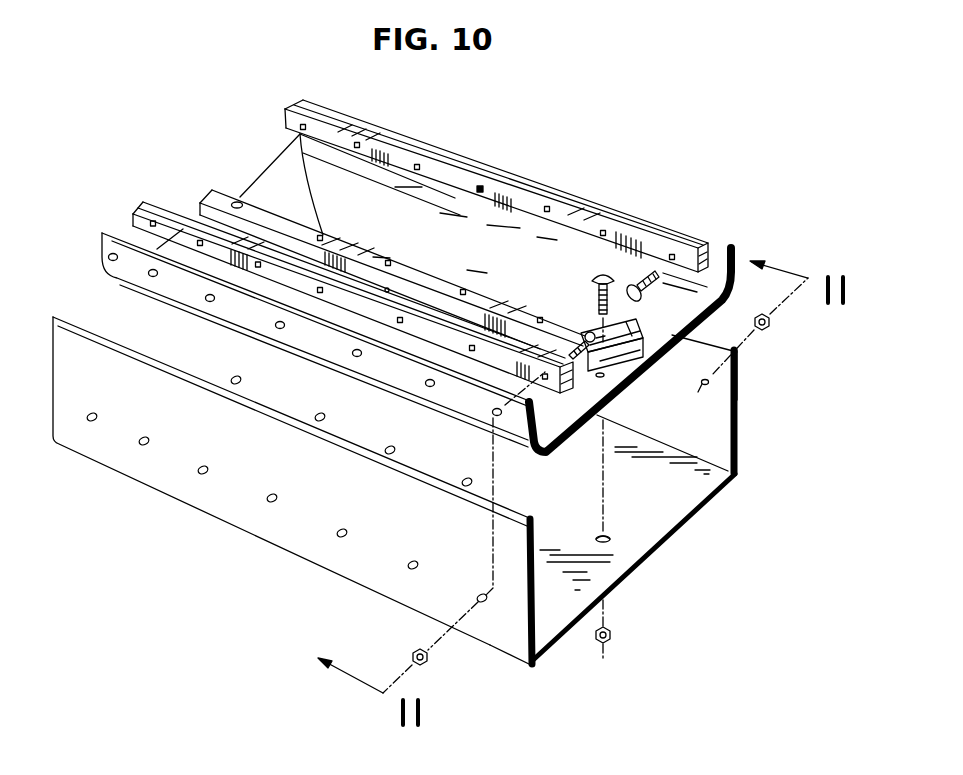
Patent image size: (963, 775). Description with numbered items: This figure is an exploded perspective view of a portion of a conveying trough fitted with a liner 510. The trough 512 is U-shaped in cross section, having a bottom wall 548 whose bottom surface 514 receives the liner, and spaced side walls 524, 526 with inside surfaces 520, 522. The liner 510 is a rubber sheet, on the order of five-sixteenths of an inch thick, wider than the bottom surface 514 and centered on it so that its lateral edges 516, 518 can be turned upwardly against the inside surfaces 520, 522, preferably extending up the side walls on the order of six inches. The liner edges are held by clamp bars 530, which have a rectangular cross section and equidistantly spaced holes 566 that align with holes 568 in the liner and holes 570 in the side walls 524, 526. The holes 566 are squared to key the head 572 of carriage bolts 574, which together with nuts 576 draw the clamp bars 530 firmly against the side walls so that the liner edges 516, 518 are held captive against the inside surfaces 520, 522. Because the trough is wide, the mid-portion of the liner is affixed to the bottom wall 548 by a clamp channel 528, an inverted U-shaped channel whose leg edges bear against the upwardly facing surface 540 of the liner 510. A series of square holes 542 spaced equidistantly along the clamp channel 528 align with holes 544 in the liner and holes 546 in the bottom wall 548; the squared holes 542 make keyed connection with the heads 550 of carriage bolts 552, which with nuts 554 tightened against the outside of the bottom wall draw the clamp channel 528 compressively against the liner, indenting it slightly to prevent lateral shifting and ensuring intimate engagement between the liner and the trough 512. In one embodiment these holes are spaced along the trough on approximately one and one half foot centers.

The liner 510 is at (622, 174).
The trough 512 is at (660, 548).
The bottom surface of the trough 514 is at (597, 575).
The lateral edge of the liner 516 is at (632, 215).
The lateral edge of the liner 518 is at (157, 277).
The inside surface of side wall 520 is at (724, 432).
The inside surface of side wall 522 is at (535, 632).
The side wall of the trough 524 is at (740, 387).
The side wall of the trough 526 is at (523, 580).
The clamp channel 528 is at (211, 193).
The clamp bar 530 is at (228, 252).
The upwardly facing surface of the liner 540 is at (677, 310).
The square hole in clamp channel 542 is at (237, 202).
The hole in the liner 544 is at (197, 222).
The hole in bottom wall 546 is at (610, 537).
The bottom wall of the trough 548 is at (525, 652).
The head of carriage bolt 550 is at (612, 274).
The carriage bolt 552 is at (658, 276).
The nut 554 is at (613, 640).
The hole in clamp bar 566 is at (480, 190).
The hole in the liner 568 is at (127, 289).
The hole in trough side wall 570 is at (270, 501).
The head of carriage bolt 572 is at (703, 383).
The carriage bolt 574 is at (580, 338).
The nut 576 is at (418, 646).